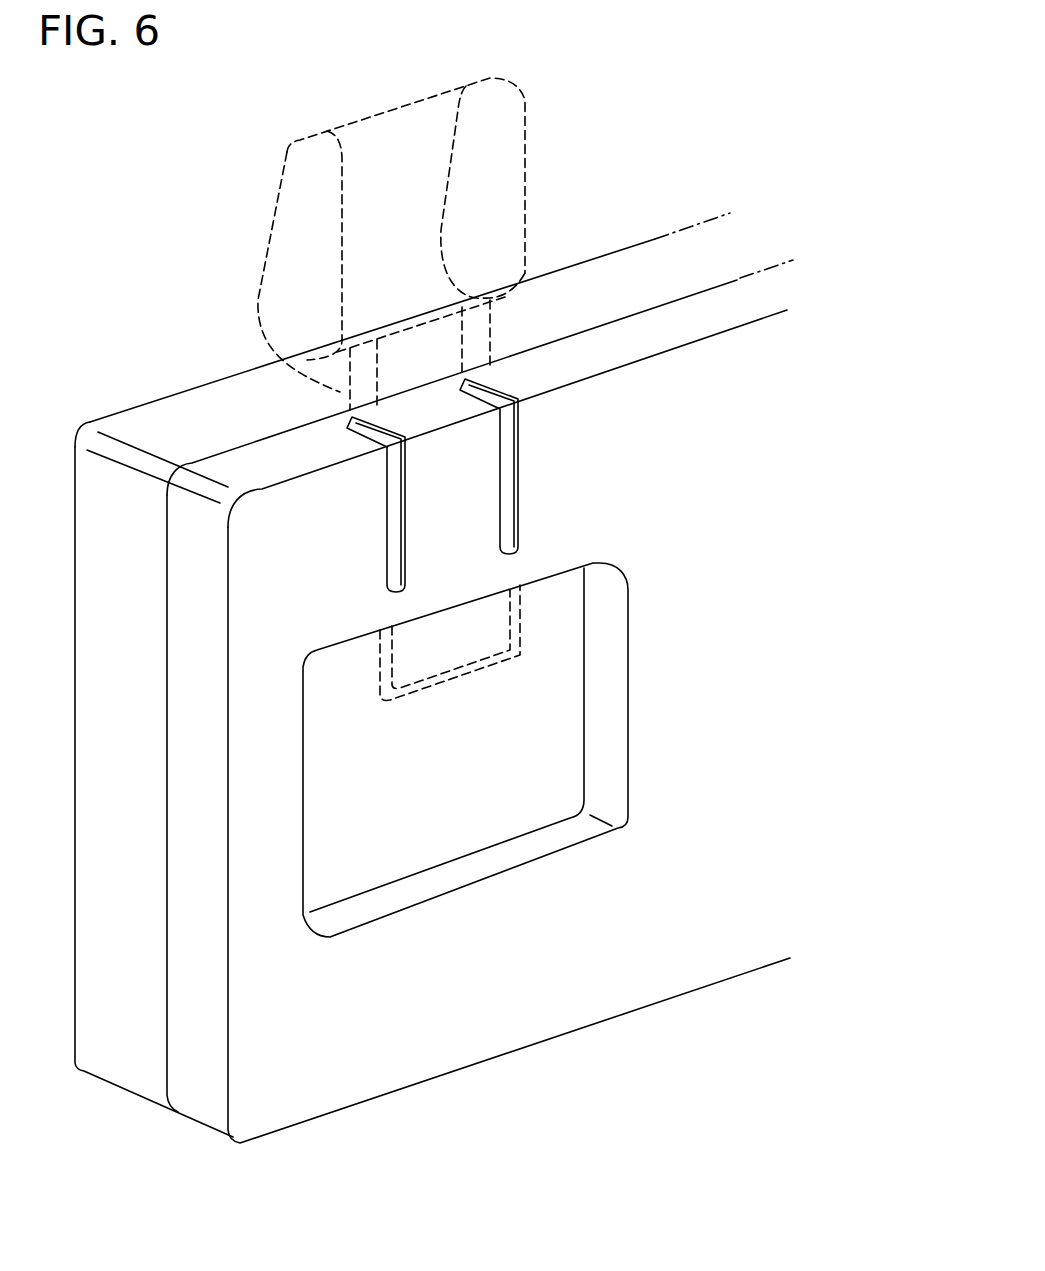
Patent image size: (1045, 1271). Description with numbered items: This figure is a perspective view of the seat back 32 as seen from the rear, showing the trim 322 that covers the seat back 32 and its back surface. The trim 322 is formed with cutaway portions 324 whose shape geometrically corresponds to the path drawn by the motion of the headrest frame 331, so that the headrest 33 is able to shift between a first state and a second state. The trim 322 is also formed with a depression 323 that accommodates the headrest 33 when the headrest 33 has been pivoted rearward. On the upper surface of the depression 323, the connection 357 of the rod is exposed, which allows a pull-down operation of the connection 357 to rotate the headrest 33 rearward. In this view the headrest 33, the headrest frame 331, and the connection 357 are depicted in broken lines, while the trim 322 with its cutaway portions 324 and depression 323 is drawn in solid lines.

The seat back 32 is at (713, 211).
The trim 322 is at (748, 408).
The depression 323 is at (603, 750).
The cutaway portions 324 is at (390, 494).
The headrest 33 is at (527, 128).
The headrest frame 331 is at (292, 357).
The connection 357 is at (452, 689).